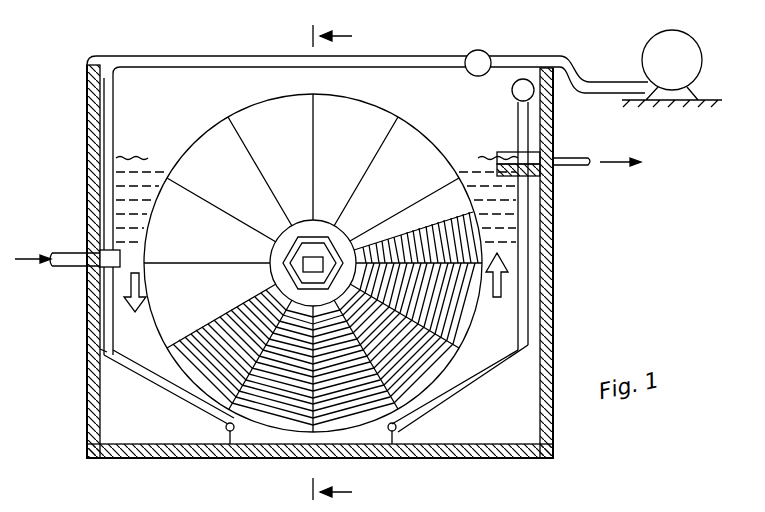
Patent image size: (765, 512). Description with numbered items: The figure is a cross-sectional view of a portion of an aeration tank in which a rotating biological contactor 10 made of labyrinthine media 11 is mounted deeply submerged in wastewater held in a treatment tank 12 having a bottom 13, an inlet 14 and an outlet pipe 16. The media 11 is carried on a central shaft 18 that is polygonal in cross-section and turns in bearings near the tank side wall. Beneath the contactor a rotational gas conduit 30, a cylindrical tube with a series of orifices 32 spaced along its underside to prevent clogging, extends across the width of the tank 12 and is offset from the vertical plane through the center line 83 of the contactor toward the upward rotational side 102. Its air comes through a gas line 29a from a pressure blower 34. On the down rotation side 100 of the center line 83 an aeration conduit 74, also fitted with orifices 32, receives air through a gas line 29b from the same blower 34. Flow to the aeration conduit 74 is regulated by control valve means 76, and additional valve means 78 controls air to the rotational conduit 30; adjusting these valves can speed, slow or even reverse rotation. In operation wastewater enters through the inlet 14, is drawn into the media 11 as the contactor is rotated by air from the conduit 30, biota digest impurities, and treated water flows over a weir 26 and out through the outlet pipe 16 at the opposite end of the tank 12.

The rotating biological contactor 10 is at (432, 124).
The labyrinthine media 11 is at (476, 312).
The treatment tank 12 is at (555, 186).
The bottom 13 is at (97, 450).
The inlet 14 is at (68, 250).
The outlet pipe 16 is at (578, 157).
The central shaft 18 is at (270, 258).
The weir 26 is at (504, 152).
The gas line 29a is at (525, 305).
The gas line 29b is at (118, 78).
The rotational gas conduit 30 is at (400, 428).
The orifices 32 is at (228, 458).
The pressure blower 34 is at (672, 60).
The aeration conduit 74 is at (224, 421).
The control valve means 76 is at (478, 50).
The valve means 78 is at (511, 90).
The center line 83 is at (310, 471).
The down rotation side 100 is at (134, 285).
The upward rotational side 102 is at (503, 282).